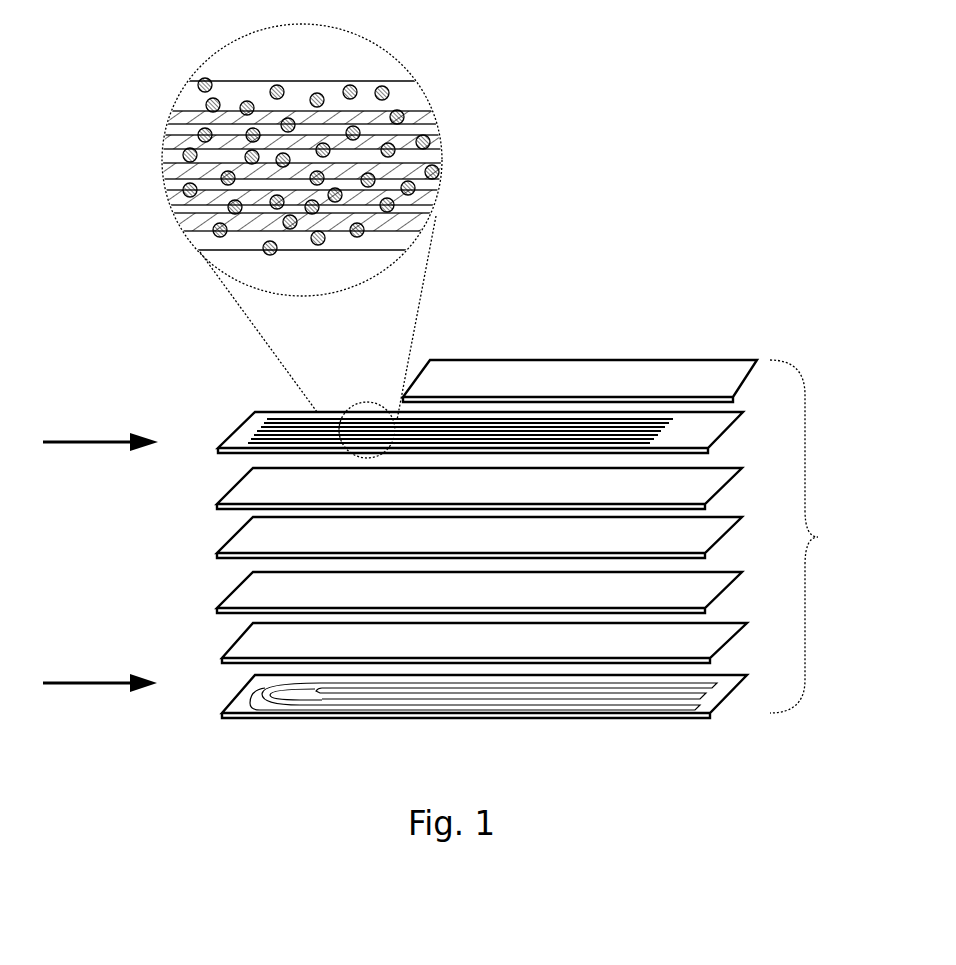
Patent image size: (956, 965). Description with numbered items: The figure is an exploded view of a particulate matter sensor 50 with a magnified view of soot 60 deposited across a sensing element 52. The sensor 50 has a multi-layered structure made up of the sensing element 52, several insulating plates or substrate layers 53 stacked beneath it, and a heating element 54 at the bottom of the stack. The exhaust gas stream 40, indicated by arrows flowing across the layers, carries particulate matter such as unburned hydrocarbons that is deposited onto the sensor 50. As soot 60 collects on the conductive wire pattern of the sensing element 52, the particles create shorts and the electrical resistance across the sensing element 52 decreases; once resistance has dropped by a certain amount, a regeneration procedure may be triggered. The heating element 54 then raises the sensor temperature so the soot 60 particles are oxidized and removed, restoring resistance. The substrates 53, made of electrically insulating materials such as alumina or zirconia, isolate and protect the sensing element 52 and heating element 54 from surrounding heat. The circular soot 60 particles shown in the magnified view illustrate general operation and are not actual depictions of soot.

The exhaust gas stream 40 is at (98, 442).
The particulate matter sensor 50 is at (811, 536).
The sensing element 52 is at (277, 402).
The substrate layers 53 is at (486, 498).
The heating element 54 is at (260, 732).
The soot 60 is at (390, 97).